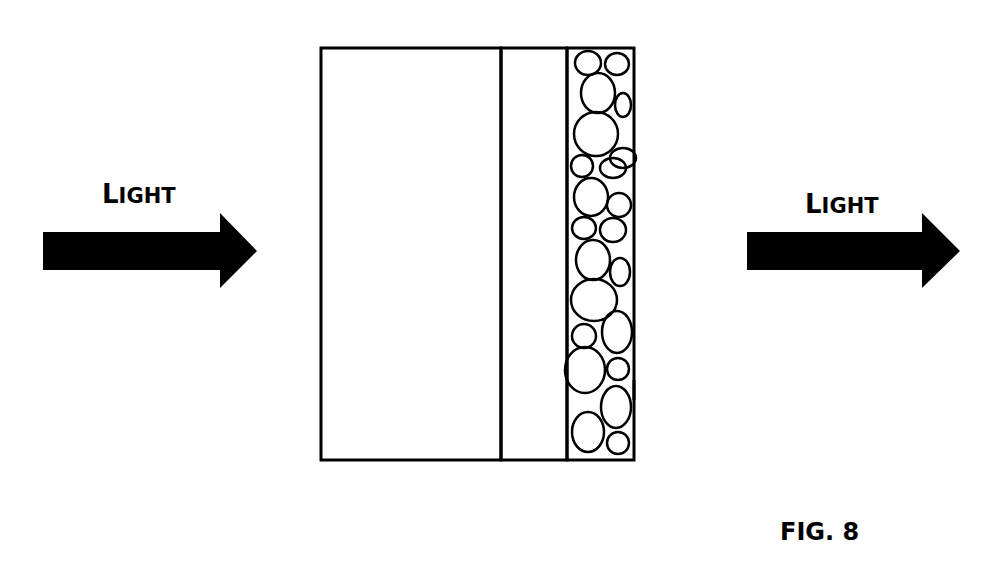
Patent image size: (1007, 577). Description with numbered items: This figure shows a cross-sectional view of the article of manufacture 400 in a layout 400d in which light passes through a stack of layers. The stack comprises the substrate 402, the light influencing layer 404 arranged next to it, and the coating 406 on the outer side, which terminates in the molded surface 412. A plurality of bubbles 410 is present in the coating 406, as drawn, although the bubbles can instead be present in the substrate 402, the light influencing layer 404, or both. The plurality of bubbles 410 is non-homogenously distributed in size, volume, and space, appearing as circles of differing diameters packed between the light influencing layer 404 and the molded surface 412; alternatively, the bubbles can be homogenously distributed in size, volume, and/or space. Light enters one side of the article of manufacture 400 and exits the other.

The article of manufacture 400 is at (573, 269).
The layout 400d is at (525, 269).
The substrate 402 is at (410, 452).
The light influencing layer 404 is at (535, 452).
The coating 406 is at (637, 269).
The plurality of bubbles 410 is at (590, 58).
The molded surface 412 is at (648, 390).